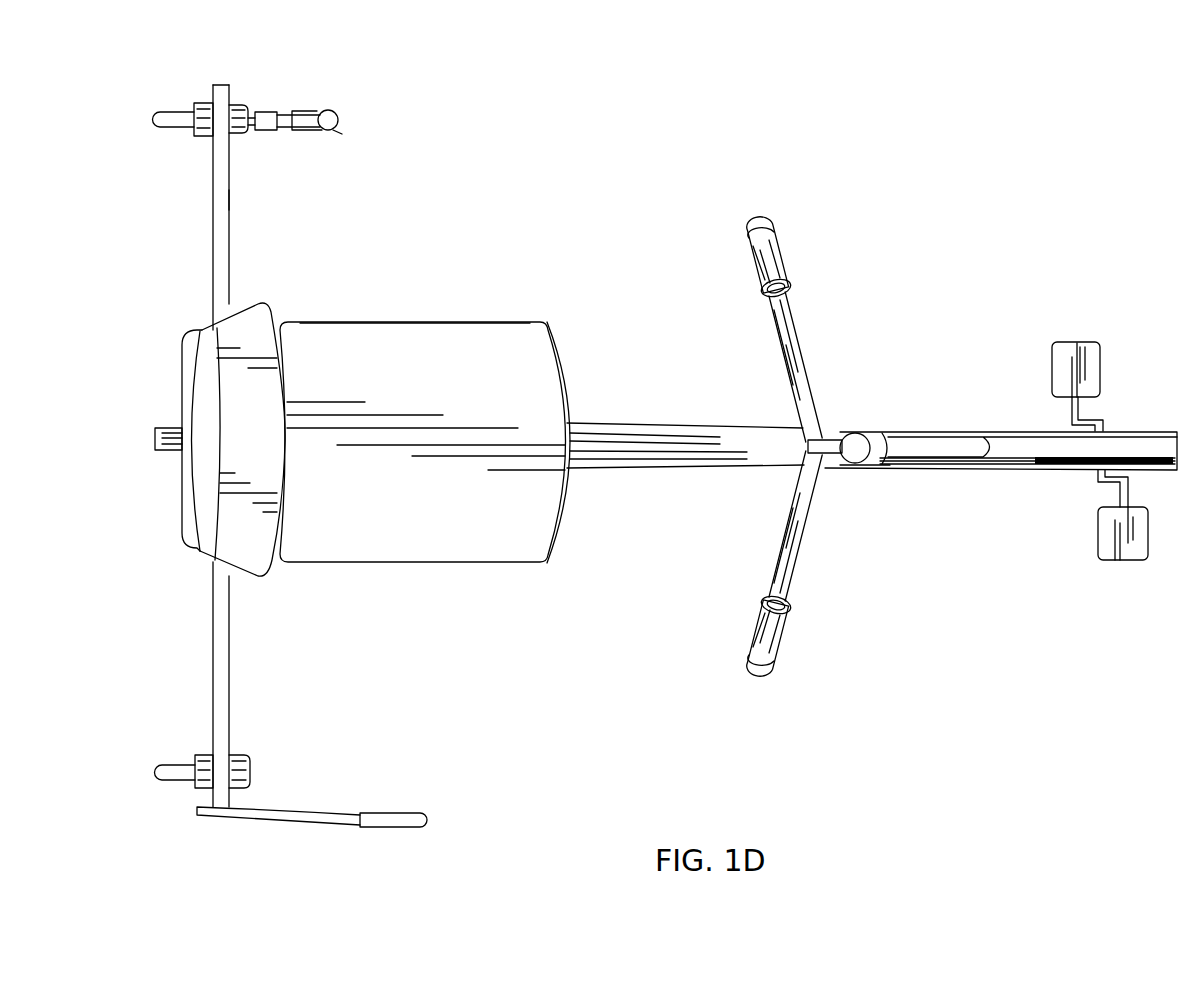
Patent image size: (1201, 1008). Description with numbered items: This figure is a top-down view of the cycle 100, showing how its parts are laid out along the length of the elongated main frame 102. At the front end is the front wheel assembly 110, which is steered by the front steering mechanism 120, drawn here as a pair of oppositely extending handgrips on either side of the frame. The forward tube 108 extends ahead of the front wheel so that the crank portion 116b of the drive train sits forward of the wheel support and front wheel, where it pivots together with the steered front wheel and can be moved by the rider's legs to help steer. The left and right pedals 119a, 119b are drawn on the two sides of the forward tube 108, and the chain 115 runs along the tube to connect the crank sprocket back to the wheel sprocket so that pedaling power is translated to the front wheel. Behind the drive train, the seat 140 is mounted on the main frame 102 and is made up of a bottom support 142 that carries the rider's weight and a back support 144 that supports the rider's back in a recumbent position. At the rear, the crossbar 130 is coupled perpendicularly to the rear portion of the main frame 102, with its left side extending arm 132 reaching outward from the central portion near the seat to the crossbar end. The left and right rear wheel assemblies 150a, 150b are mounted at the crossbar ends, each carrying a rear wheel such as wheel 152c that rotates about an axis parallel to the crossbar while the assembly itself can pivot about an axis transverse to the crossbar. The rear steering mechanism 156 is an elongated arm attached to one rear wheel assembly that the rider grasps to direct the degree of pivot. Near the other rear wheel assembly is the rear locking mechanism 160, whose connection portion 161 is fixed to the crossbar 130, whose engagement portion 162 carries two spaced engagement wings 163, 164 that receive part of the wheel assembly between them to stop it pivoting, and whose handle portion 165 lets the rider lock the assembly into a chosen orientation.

The cycle 100 is at (627, 172).
The main frame 102 is at (687, 468).
The forward tube 108 is at (1008, 431).
The front wheel assembly 110 is at (933, 508).
The chain 115 is at (1015, 465).
The crank portion 116b is at (1155, 430).
The left pedal 119a is at (1077, 341).
The right pedal 119b is at (1125, 561).
The front steering mechanism 120 is at (809, 530).
The crossbar 130 is at (213, 178).
The left side extending arm 132 is at (229, 200).
The seat 140 is at (350, 564).
The bottom support 142 is at (425, 328).
The back support 144 is at (261, 303).
The left rear wheel assembly 150a is at (198, 105).
The right rear wheel assembly 150b is at (177, 762).
The hub 152c is at (155, 442).
The rear steering mechanism 156 is at (380, 828).
The rear locking mechanism 160 is at (321, 112).
The connection portion 161 is at (263, 112).
The engagement portion 162 is at (331, 131).
The engagement wing 163 is at (310, 110).
The engagement wing 164 is at (297, 136).
The handle portion 165 is at (337, 114).